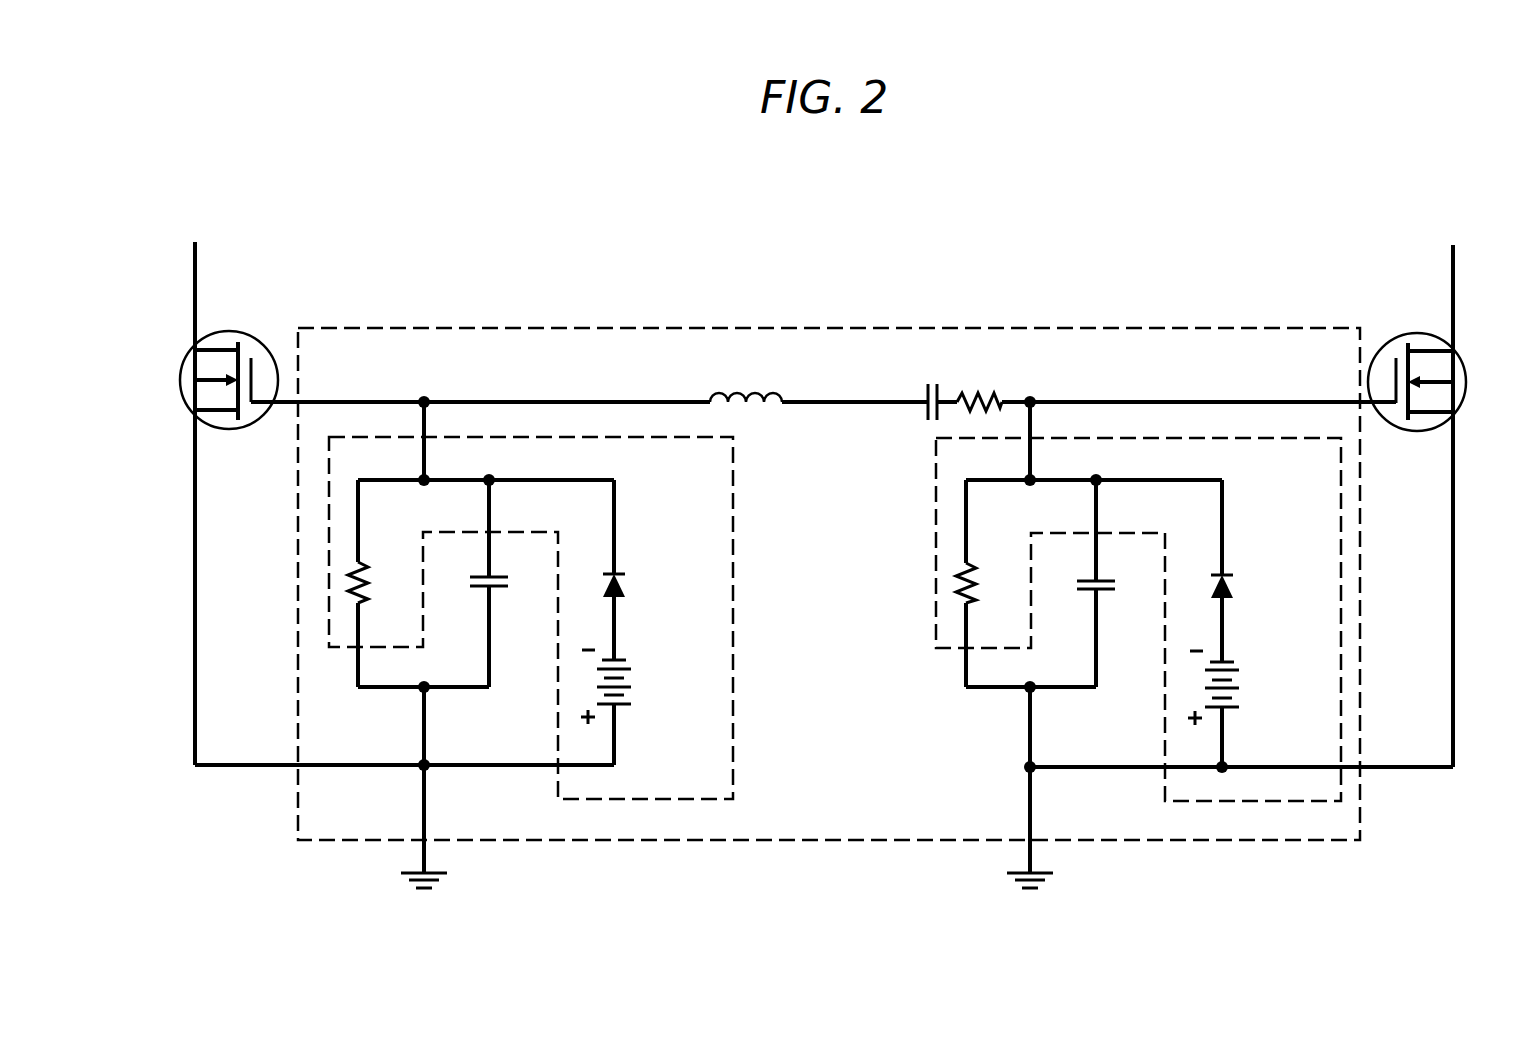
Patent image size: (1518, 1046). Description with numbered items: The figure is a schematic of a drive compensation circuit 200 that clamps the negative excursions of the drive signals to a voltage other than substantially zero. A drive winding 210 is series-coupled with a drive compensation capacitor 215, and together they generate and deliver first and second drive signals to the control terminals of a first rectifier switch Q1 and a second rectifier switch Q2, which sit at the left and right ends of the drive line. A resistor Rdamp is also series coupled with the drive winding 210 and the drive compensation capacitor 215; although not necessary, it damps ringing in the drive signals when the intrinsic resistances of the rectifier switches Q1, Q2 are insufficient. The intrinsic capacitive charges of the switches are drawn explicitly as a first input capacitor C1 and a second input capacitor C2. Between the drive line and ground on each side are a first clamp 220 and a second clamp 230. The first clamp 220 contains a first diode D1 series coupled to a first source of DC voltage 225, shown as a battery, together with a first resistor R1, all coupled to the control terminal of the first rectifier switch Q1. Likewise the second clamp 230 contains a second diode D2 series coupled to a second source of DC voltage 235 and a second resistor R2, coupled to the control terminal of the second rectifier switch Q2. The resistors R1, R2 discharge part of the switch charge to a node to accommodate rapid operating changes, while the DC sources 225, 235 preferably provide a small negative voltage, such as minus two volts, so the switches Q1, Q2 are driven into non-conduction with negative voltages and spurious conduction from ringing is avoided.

The drive compensation circuit 200 is at (818, 328).
The drive winding 210 is at (754, 424).
The drive compensation capacitor 215 is at (912, 413).
The resistor Rdamp is at (983, 379).
The first clamp 220 is at (514, 642).
The first source of DC voltage 225 is at (654, 704).
The second clamp 230 is at (1145, 642).
The second source of DC voltage 235 is at (1261, 704).
The first rectifier switch Q1 is at (209, 503).
The second rectifier switch Q2 is at (1435, 506).
The first resistor R1 is at (377, 583).
The first input capacitor C1 is at (507, 583).
The first diode D1 is at (637, 570).
The second resistor R2 is at (986, 583).
The second input capacitor C2 is at (1115, 583).
The second diode D2 is at (1245, 571).